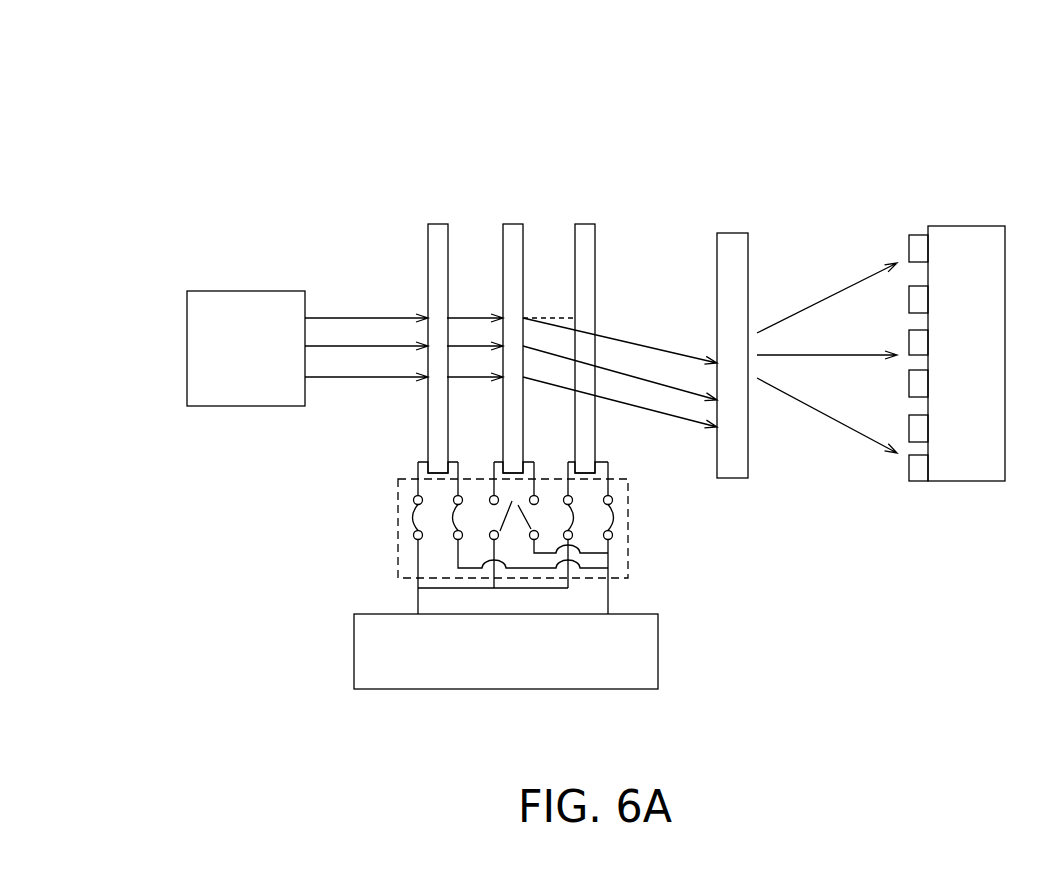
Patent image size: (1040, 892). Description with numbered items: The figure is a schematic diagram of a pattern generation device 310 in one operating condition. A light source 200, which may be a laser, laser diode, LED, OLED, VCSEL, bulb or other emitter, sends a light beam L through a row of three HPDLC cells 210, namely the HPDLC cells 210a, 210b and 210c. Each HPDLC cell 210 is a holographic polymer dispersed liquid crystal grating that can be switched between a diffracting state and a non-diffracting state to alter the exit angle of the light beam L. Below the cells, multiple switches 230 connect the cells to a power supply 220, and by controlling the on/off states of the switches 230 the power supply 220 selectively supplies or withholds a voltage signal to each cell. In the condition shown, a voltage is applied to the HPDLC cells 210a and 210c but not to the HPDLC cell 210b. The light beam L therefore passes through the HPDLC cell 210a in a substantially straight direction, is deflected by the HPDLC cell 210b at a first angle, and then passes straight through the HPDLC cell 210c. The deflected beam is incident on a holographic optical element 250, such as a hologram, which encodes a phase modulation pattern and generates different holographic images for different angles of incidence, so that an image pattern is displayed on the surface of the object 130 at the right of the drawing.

The pattern generation device 310 is at (210, 81).
The light source 200 is at (246, 291).
The light beam L is at (601, 358).
The HPDLC cell 210 is at (418, 97).
The HPDLC cell 210a is at (441, 224).
The HPDLC cell 210b is at (517, 224).
The HPDLC cell 210c is at (589, 224).
The holographic optical element 250 is at (733, 233).
The object 130 is at (965, 226).
The switches 230 is at (628, 535).
The power supply 220 is at (658, 652).